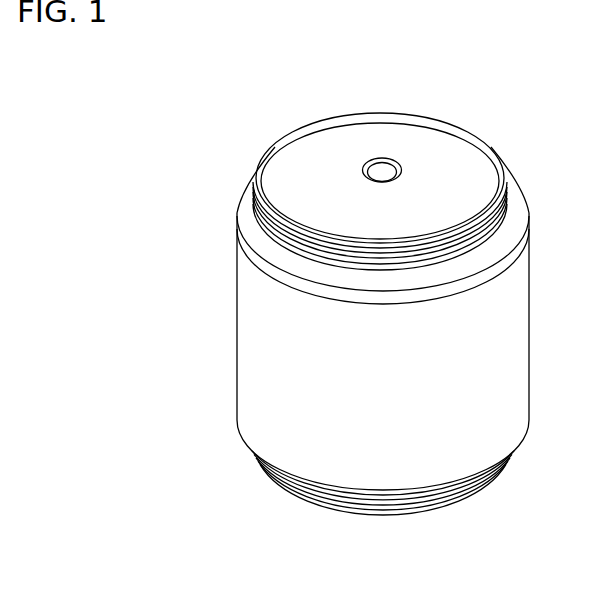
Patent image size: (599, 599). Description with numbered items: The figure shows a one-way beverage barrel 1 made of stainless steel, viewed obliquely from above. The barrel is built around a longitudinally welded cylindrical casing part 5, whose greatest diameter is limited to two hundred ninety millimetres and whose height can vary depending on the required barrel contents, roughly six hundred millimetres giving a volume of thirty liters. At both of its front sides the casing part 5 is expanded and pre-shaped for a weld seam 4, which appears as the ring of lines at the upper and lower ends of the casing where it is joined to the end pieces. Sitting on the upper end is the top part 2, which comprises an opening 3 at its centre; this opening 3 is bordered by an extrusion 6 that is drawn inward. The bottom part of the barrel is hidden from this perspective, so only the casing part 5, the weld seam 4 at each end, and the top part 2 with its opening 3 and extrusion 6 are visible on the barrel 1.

The one-way beverage barrel 1 is at (233, 317).
The top part 2 is at (455, 162).
The opening 3 is at (383, 177).
The weld seam 4 is at (500, 162).
The cylindrical casing part 5 is at (513, 335).
The extrusion 6 is at (366, 165).